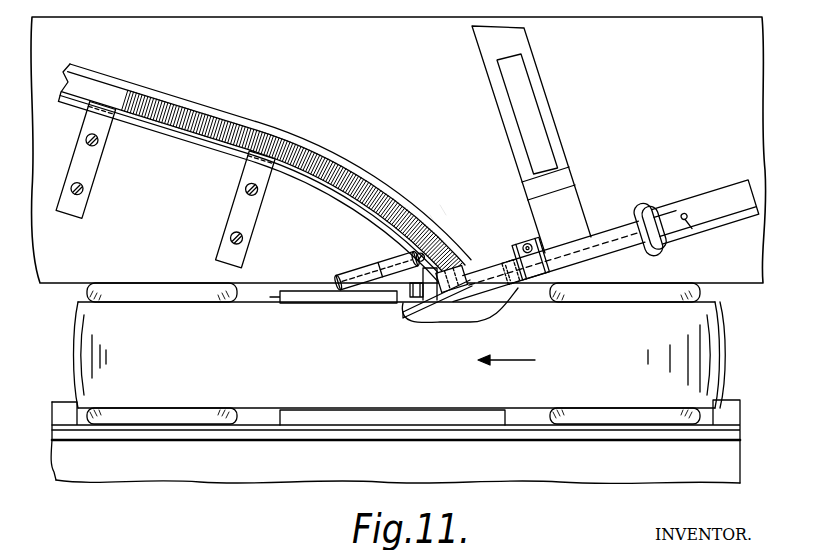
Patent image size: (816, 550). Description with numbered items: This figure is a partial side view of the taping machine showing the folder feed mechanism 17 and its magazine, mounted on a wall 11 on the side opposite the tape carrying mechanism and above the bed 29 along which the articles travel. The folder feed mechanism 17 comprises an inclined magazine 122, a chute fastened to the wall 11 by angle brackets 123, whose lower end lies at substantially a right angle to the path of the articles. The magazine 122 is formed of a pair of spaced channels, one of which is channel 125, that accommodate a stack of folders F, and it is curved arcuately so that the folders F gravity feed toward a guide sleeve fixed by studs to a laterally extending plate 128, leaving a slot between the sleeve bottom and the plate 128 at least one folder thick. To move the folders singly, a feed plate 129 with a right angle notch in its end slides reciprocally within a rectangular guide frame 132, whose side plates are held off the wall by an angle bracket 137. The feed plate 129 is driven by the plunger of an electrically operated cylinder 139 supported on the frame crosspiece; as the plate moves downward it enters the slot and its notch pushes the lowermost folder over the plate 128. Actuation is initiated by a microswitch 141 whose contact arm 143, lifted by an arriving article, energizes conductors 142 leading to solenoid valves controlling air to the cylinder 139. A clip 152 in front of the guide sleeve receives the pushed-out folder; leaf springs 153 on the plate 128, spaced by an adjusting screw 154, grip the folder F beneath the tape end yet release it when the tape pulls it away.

The mounting plate 11 is at (703, 35).
The folder feed mechanism 17 is at (408, 189).
The bed rail 29 is at (727, 407).
The magazine 122 is at (265, 175).
The angle brackets 123 is at (83, 168).
The channel 125 is at (223, 117).
The plate 128 is at (511, 272).
The feed plate 129 is at (530, 258).
The guide frame 132 is at (548, 248).
The angle bracket 137 is at (563, 142).
The cylinder 139 is at (697, 214).
The microswitch 141 is at (380, 270).
The conductors 142 is at (686, 221).
The contact arm 143 is at (320, 305).
The clip 152 is at (433, 310).
The leaf springs 153 is at (437, 299).
The screw 154 is at (428, 312).
The folder F is at (438, 216).